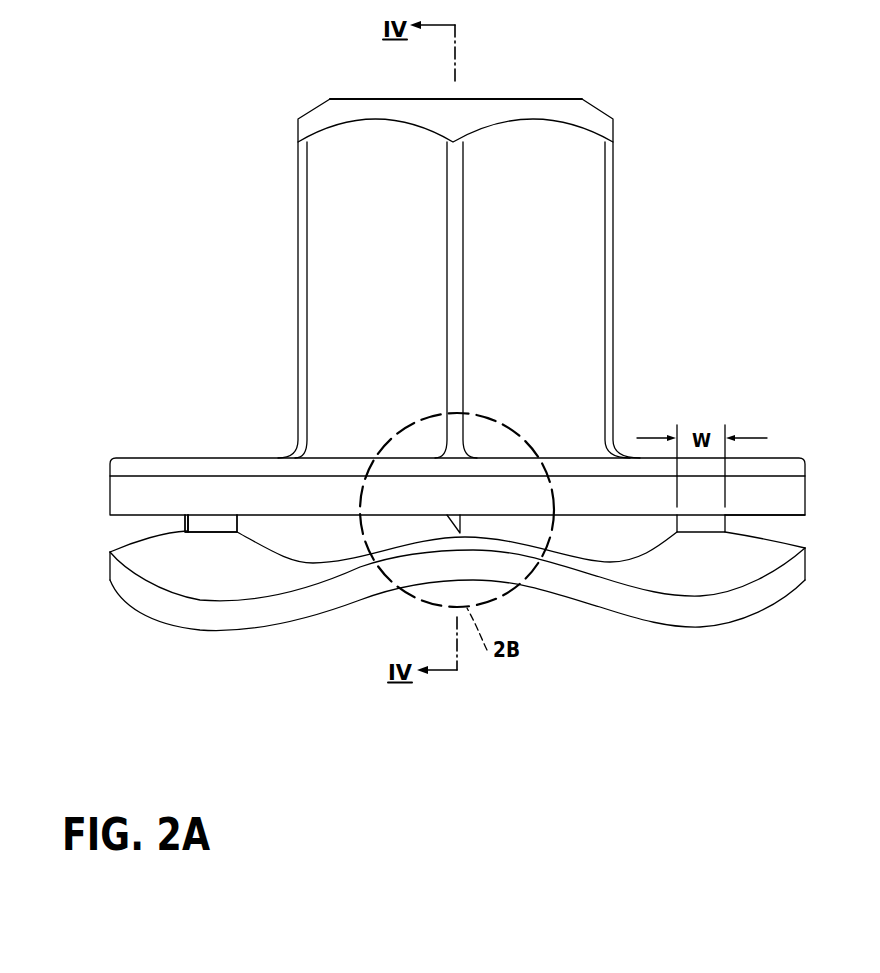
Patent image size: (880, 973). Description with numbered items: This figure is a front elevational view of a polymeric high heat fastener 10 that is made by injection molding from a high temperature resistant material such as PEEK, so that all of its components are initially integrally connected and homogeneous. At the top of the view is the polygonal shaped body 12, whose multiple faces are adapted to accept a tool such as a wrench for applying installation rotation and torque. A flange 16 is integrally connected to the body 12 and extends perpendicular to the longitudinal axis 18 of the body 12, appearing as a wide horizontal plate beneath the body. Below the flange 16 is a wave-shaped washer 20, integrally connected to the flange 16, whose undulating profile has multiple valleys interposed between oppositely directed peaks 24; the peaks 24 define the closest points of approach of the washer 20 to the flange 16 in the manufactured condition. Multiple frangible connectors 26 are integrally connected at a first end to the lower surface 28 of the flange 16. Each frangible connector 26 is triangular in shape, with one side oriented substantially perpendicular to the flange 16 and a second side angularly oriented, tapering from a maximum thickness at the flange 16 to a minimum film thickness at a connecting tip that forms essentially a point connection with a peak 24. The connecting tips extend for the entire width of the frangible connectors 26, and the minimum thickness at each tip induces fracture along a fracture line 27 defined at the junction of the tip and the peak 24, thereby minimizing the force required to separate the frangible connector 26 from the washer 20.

The polymeric high heat fastener 10 is at (676, 136).
The polygonal shaped body 12 is at (606, 272).
The flange 16 is at (228, 472).
The longitudinal axis 18 is at (457, 63).
The wave-shaped washer 20 is at (147, 600).
The peaks 24 is at (180, 527).
The frangible connectors 26 is at (215, 523).
The fracture line 27 is at (199, 524).
The lower surface 28 is at (760, 526).